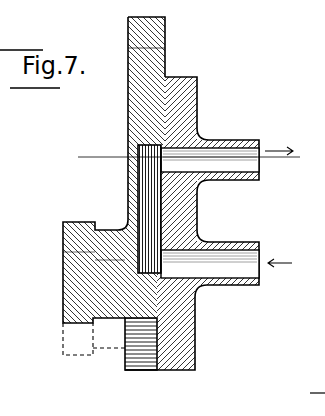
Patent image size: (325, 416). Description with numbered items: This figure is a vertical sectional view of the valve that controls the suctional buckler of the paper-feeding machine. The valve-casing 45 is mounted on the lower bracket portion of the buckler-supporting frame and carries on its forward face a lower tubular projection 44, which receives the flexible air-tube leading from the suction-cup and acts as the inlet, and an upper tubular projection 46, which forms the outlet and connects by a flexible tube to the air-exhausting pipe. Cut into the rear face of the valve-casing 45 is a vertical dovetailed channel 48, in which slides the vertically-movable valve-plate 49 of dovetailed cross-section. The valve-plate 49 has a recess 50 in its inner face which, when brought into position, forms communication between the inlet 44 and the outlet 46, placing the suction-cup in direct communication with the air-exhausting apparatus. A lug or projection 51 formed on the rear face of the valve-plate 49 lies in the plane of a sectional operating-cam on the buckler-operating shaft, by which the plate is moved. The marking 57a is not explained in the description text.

The lower tubular projection 44 is at (240, 278).
The valve-casing 45 is at (190, 100).
The upper tubular projection 46 is at (241, 139).
The dovetailed channel 48 is at (150, 358).
The valve-plate 49 is at (133, 112).
The recess 50 is at (145, 203).
The lug or projection 51 is at (67, 300).
The pipe connection 57a is at (244, 415).